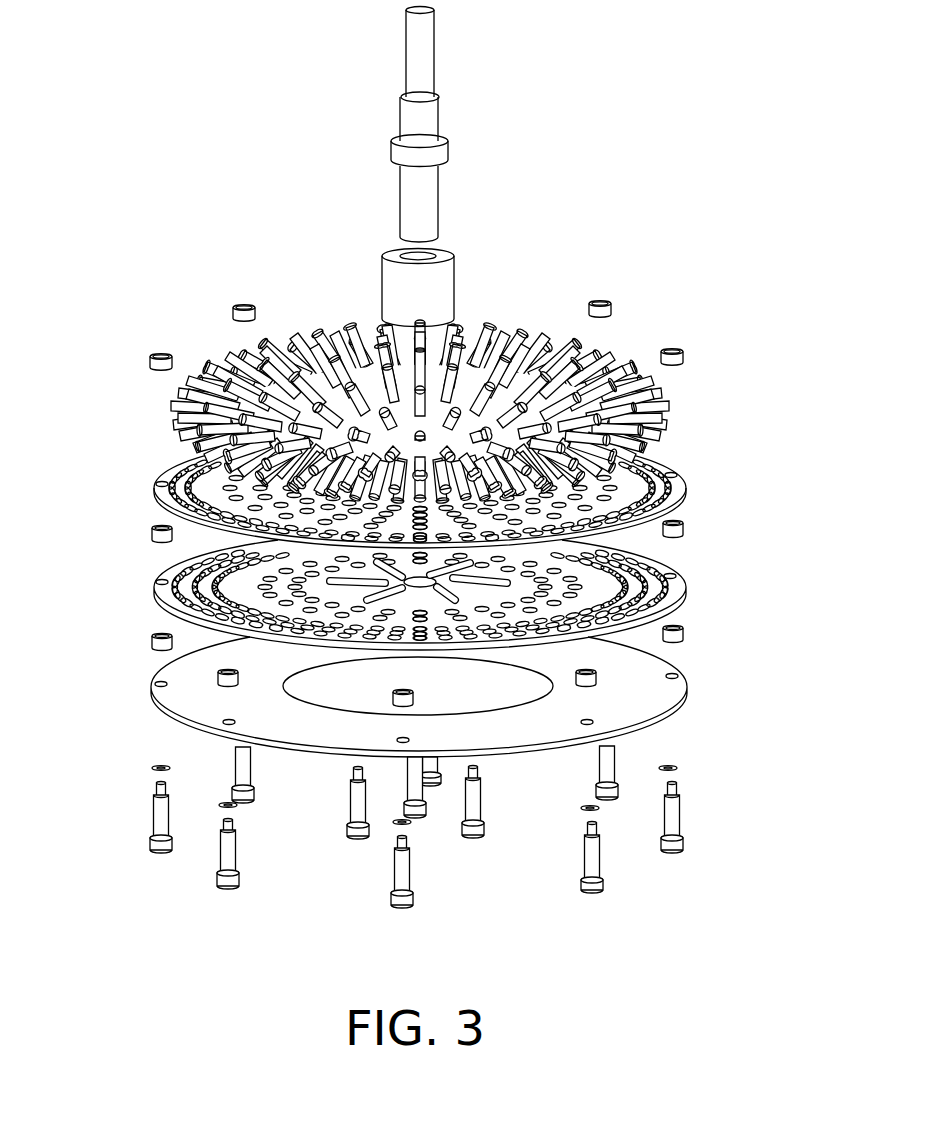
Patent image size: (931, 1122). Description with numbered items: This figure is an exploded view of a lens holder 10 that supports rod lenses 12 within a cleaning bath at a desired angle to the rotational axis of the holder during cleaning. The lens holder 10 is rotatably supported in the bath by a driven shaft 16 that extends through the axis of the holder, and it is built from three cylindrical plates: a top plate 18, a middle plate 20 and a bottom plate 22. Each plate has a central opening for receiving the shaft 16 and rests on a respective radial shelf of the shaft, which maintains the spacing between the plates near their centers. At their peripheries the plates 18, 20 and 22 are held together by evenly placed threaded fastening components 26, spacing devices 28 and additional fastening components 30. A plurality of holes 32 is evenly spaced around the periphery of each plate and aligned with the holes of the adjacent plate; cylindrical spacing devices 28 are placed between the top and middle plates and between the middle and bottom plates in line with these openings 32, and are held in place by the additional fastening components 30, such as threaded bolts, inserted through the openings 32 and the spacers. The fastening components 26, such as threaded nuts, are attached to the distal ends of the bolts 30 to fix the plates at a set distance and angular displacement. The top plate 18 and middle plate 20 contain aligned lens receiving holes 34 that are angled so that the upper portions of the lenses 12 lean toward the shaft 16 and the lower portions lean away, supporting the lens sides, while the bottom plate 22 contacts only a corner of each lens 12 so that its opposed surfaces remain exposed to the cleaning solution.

The lens holder 10 is at (732, 250).
The rod lenses 12 is at (327, 345).
The driven shaft 16 is at (438, 193).
The top plate 18 is at (662, 467).
The middle plate 20 is at (658, 570).
The bottom plate 22 is at (618, 652).
The threaded fastening components 26 is at (244, 300).
The spacing devices 28 is at (152, 534).
The additional fastening components 30 is at (161, 850).
The holes 32 is at (163, 482).
The lens receiving holes 34 is at (197, 507).